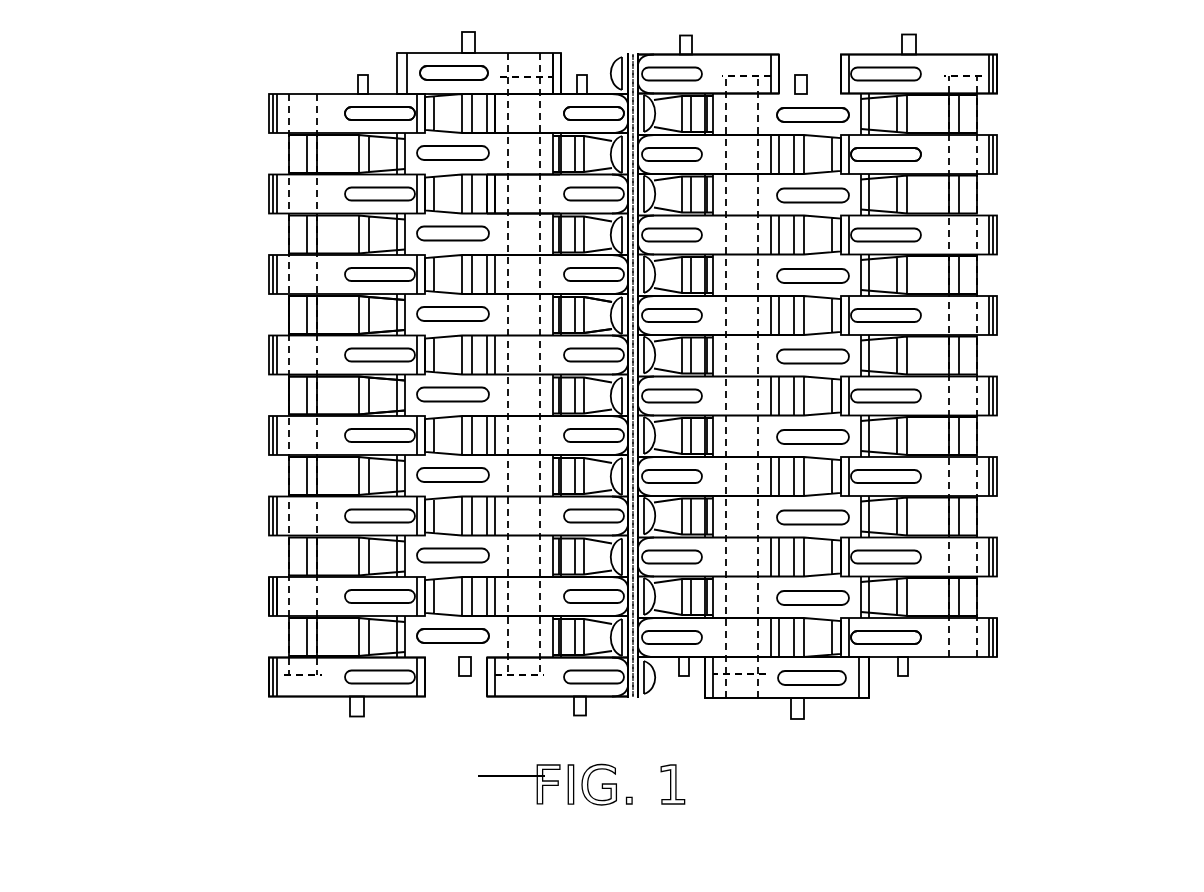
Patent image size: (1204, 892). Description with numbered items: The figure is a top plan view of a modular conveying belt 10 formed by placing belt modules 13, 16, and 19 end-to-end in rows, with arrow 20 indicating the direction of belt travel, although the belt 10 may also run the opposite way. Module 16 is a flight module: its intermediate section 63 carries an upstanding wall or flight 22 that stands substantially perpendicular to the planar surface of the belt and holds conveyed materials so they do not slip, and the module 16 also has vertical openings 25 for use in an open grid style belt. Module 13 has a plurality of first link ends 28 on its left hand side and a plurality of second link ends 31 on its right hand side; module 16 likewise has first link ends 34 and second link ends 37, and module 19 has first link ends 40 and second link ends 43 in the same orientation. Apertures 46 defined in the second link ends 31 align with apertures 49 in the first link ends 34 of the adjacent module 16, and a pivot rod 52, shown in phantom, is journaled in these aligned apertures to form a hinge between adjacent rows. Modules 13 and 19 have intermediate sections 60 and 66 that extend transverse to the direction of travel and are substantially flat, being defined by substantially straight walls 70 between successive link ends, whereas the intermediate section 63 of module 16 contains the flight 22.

The modular conveying belt 10 is at (1018, 77).
The belt module 13 is at (410, 687).
The flight module 16 is at (552, 687).
The belt module 19 is at (845, 692).
The arrow indicating direction of belt travel 20 is at (1043, 18).
The upstanding wall or flight 22 is at (630, 665).
The vertical openings 25 is at (434, 72).
The first link ends 28 is at (558, 92).
The second link ends 31 is at (495, 640).
The first link ends 34 is at (560, 107).
The second link ends 37 is at (713, 64).
The first link ends 40 is at (747, 113).
The second link ends 43 is at (970, 638).
The apertures 46 is at (508, 196).
The apertures 49 is at (514, 231).
The pivot rod 52 is at (518, 112).
The intermediate section 60 is at (413, 332).
The intermediate section 63 is at (643, 93).
The intermediate section 66 is at (848, 185).
The substantially straight walls 70 is at (413, 396).